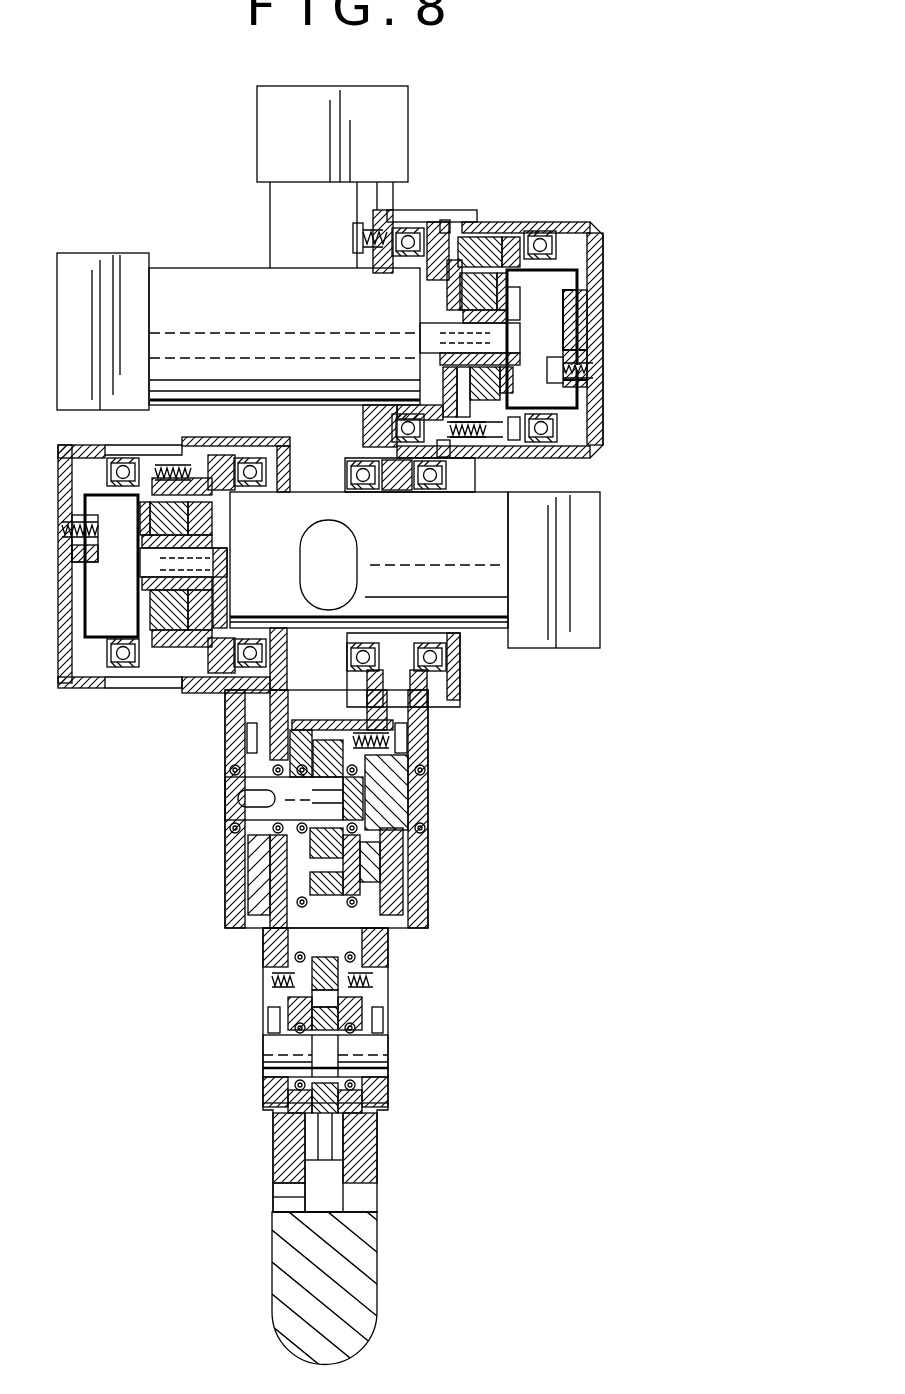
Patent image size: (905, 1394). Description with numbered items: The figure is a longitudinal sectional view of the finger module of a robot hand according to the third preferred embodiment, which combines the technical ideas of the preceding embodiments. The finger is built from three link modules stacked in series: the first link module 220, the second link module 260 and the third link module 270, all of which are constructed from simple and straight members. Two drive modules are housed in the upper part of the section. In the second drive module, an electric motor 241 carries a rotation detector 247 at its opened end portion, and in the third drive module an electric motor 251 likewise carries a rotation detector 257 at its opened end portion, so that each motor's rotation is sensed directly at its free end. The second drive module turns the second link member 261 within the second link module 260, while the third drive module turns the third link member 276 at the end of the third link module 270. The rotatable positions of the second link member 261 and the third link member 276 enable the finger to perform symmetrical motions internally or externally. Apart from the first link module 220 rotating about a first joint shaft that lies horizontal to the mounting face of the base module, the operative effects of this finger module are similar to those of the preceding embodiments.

The first link module 220 is at (452, 756).
The electric motor 241 is at (205, 282).
The rotation detector 247 is at (88, 262).
The electric motor 251 is at (487, 607).
The rotation detector 257 is at (596, 537).
The second link module 260 is at (400, 1020).
The second link member 261 is at (378, 1048).
The third link module 270 is at (398, 1248).
The third link member 276 is at (357, 1253).